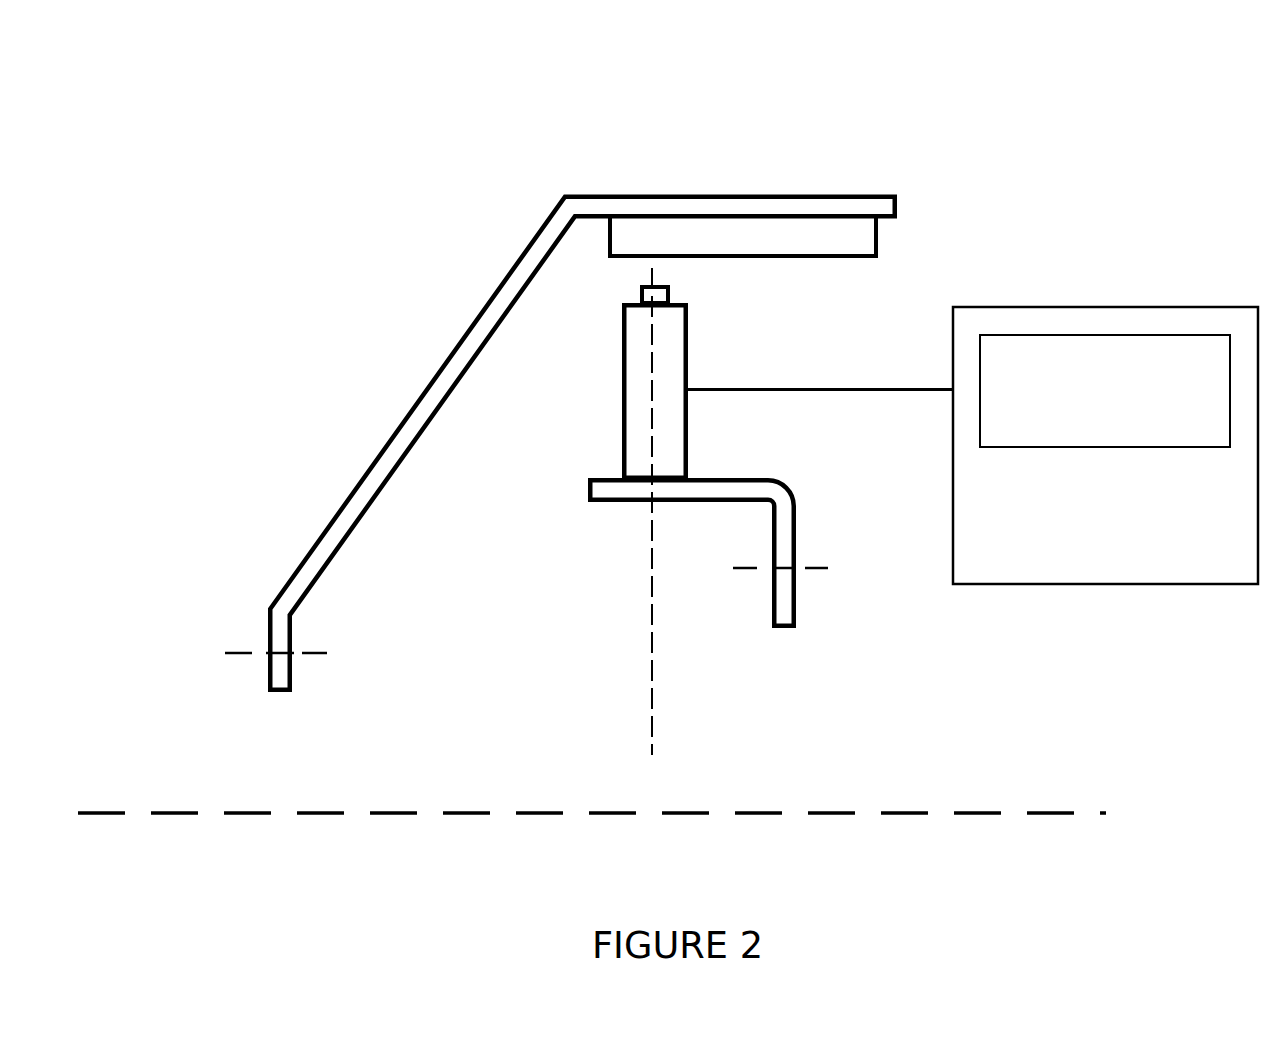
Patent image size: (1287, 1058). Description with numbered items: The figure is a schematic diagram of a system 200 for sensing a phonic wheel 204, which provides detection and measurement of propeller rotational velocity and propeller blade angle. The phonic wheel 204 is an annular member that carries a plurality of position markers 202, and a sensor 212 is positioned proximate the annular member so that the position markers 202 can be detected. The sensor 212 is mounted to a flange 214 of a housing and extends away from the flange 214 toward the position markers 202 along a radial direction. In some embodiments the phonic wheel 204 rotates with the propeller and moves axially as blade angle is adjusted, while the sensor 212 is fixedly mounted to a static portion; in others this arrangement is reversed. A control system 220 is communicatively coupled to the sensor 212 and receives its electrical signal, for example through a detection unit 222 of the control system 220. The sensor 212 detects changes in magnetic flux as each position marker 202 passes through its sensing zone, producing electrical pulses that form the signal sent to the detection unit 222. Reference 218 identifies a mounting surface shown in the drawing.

The system for sensing a phonic wheel 200 is at (305, 164).
The position markers 202 is at (722, 235).
The phonic wheel 204 is at (297, 577).
The sensor 212 is at (622, 372).
The flange 214 is at (588, 482).
The mounting surface 218 is at (886, 219).
The control system 220 is at (1132, 570).
The detection unit 222 is at (1132, 428).